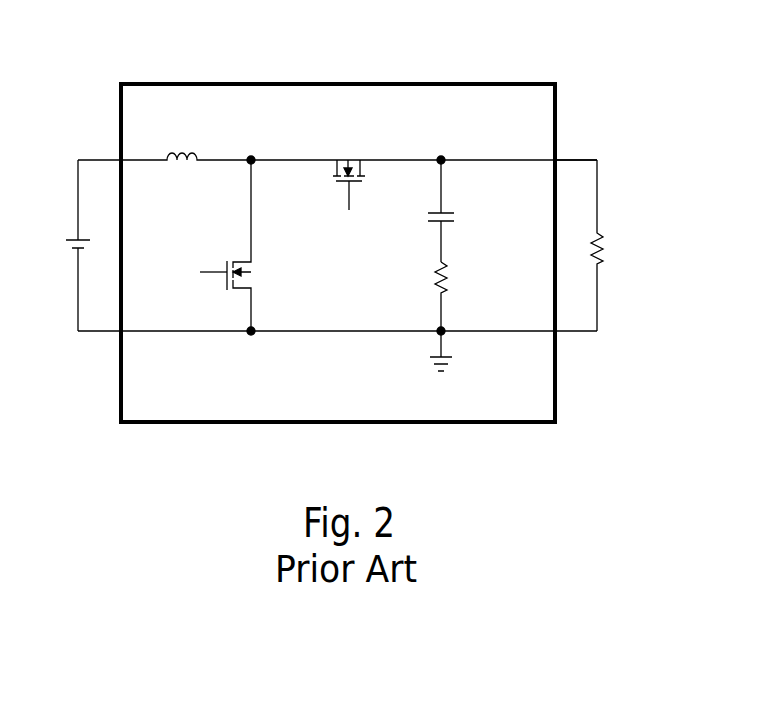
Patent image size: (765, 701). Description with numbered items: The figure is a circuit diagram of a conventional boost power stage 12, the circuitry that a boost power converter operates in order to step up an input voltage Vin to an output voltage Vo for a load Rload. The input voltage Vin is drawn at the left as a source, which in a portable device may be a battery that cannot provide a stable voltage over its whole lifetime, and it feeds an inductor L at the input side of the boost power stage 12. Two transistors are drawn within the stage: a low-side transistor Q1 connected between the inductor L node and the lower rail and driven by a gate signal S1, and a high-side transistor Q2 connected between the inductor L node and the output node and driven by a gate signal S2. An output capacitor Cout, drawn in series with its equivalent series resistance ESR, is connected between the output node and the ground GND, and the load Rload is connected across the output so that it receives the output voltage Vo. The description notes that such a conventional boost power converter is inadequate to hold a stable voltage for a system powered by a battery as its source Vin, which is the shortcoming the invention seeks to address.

The boost power stage 12 is at (340, 83).
The input voltage Vin is at (77, 229).
The inductor L is at (182, 139).
The low-side transistor Q1 is at (261, 245).
The gate control signal of Q1 S1 is at (195, 274).
The high-side transistor Q2 is at (349, 154).
The gate control signal of Q2 S2 is at (349, 212).
The output capacitor Cout is at (475, 211).
The equivalent series resistance of output capacitor ESR is at (471, 296).
The ground GND is at (439, 367).
The load Rload is at (638, 245).
The output voltage Vo is at (587, 145).